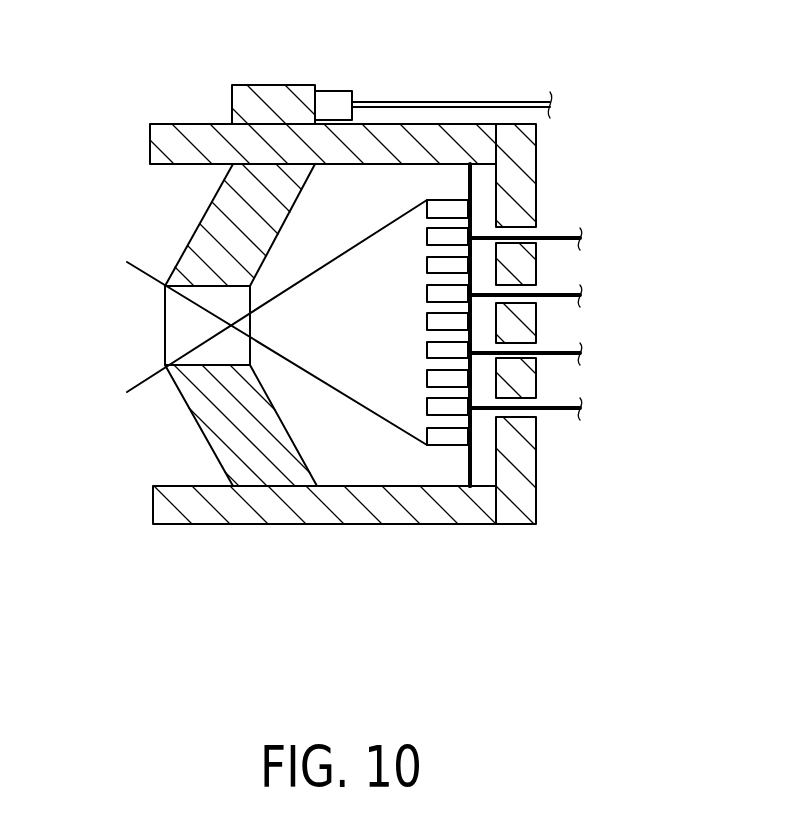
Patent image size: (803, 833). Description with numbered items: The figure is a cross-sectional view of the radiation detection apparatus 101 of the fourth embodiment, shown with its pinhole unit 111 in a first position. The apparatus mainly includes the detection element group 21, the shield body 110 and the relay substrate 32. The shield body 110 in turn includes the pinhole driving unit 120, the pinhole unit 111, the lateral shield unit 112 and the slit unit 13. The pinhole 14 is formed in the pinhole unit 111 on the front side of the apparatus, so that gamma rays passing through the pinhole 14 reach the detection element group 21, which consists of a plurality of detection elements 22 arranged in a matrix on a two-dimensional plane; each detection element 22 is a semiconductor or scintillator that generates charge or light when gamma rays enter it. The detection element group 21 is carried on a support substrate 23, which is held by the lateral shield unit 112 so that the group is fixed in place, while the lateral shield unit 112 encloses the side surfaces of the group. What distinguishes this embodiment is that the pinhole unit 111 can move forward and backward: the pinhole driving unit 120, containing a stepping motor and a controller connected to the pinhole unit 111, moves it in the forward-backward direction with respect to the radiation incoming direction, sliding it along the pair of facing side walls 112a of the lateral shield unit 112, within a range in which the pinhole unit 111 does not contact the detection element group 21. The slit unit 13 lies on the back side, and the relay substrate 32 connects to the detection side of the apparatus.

The radiation detection apparatus 101 is at (338, 584).
The shield body 110 is at (481, 539).
The pinhole unit 111 is at (207, 210).
The lateral shield unit 112 is at (272, 527).
The side walls 112a is at (150, 141).
The pinhole driving unit 120 is at (335, 92).
The slit unit 13 is at (523, 122).
The pinhole 14 is at (177, 334).
The detection element group 21 is at (441, 470).
The detection elements 22 is at (457, 198).
The support substrate 23 is at (472, 468).
The relay substrate 32 is at (549, 238).